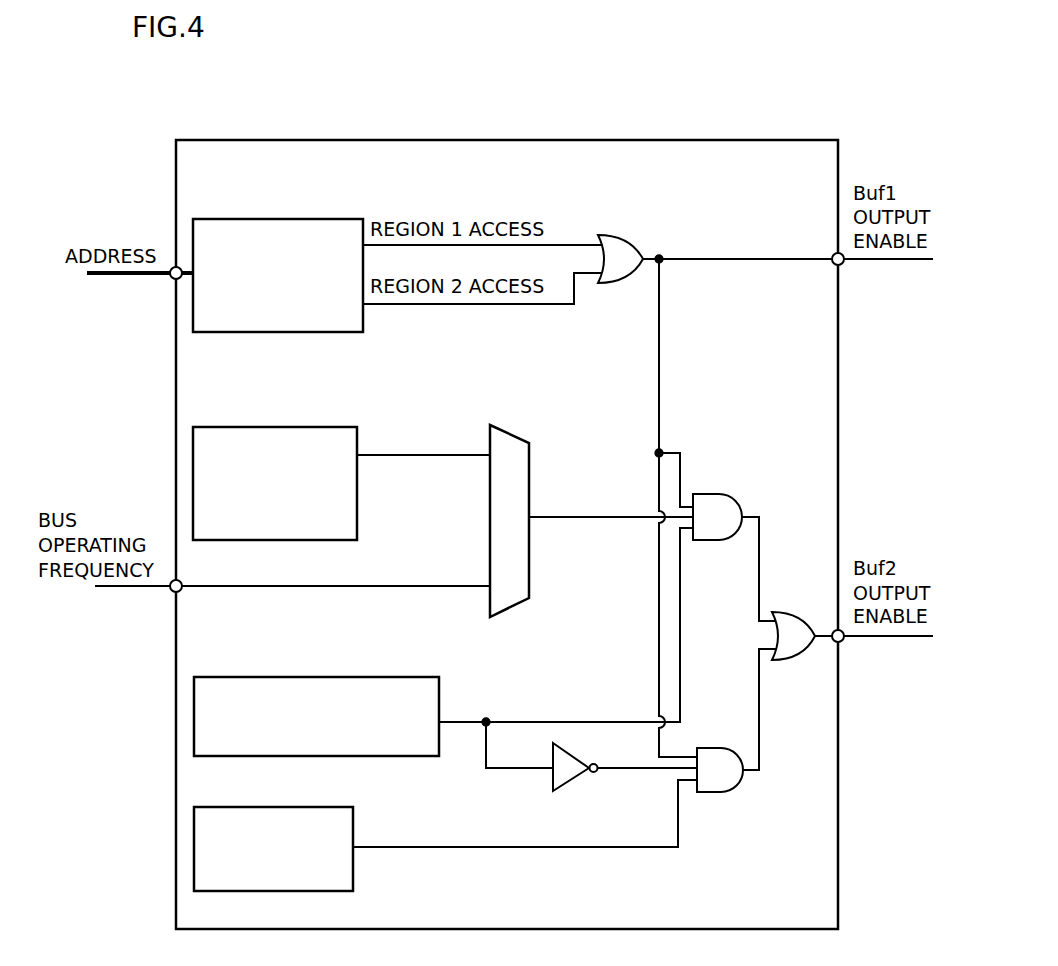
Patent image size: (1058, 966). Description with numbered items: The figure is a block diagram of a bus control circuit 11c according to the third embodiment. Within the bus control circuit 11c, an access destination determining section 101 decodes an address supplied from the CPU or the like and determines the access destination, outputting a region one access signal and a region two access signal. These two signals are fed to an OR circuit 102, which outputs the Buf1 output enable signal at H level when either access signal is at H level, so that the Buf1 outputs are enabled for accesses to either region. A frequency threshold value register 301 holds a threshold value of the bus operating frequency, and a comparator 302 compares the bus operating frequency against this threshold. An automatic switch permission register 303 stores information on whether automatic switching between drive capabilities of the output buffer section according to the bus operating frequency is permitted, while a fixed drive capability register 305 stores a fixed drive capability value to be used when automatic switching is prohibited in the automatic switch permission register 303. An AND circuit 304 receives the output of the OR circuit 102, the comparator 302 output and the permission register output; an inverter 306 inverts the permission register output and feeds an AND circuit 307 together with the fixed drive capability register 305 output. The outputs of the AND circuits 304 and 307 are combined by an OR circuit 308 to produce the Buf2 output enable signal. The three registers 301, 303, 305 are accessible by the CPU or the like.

The bus control circuit 11c is at (280, 140).
The access destination determining section 101 is at (226, 218).
The OR circuit 102 is at (606, 236).
The frequency threshold value register 301 is at (226, 427).
The comparator 302 is at (505, 432).
The automatic switch permission register 303 is at (226, 677).
The AND circuit 304 is at (708, 494).
The fixed drive capability register 305 is at (226, 807).
The inverter 306 is at (567, 783).
The AND circuit 307 is at (708, 748).
The OR circuit 308 is at (781, 612).